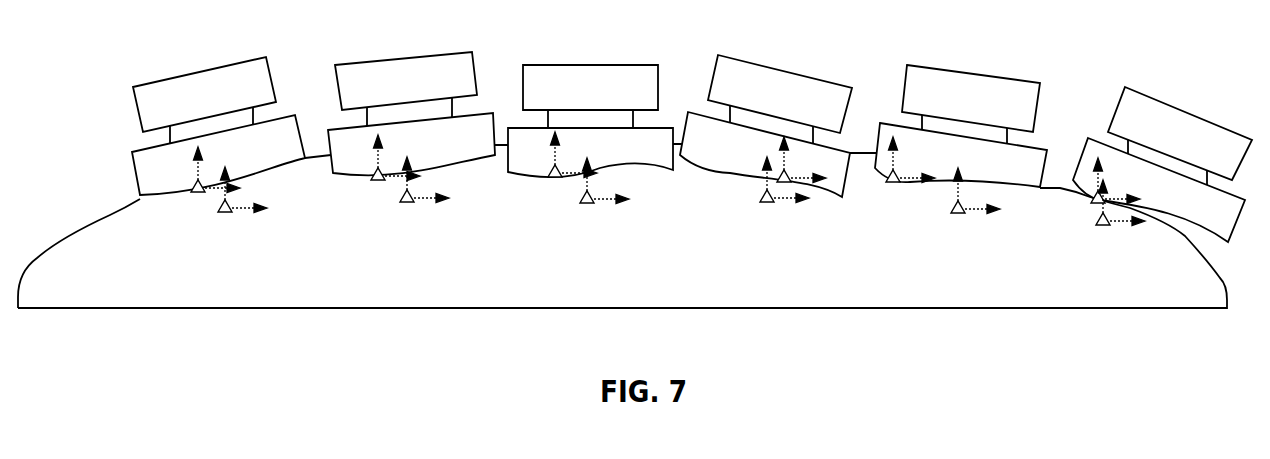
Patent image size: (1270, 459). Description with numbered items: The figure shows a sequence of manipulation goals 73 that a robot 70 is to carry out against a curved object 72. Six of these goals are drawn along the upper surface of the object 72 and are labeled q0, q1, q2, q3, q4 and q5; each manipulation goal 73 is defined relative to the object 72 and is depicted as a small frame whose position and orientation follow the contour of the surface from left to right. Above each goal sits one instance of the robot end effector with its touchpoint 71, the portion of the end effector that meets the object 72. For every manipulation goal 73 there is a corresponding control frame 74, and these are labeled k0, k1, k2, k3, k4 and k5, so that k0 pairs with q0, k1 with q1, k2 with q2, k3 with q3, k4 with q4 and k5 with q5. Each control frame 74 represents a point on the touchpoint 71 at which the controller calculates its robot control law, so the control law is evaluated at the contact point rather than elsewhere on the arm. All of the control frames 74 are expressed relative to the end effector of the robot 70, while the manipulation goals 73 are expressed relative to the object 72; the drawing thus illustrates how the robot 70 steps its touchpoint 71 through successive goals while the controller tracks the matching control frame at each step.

The robot 70 is at (180, 76).
The touchpoint 71 is at (145, 146).
The object 72 is at (48, 248).
The manipulation goal 73 is at (148, 245).
The control frame 74 is at (269, 124).
The control frame k0 is at (204, 187).
The control frame k1 is at (384, 170).
The control frame k2 is at (563, 172).
The control frame k3 is at (768, 179).
The control frame k4 is at (898, 173).
The control frame k5 is at (1105, 199).
The manipulation goal q0 is at (219, 205).
The manipulation goal q1 is at (401, 197).
The manipulation goal q2 is at (578, 200).
The manipulation goal q3 is at (760, 198).
The manipulation goal q4 is at (950, 208).
The manipulation goal q5 is at (1097, 218).